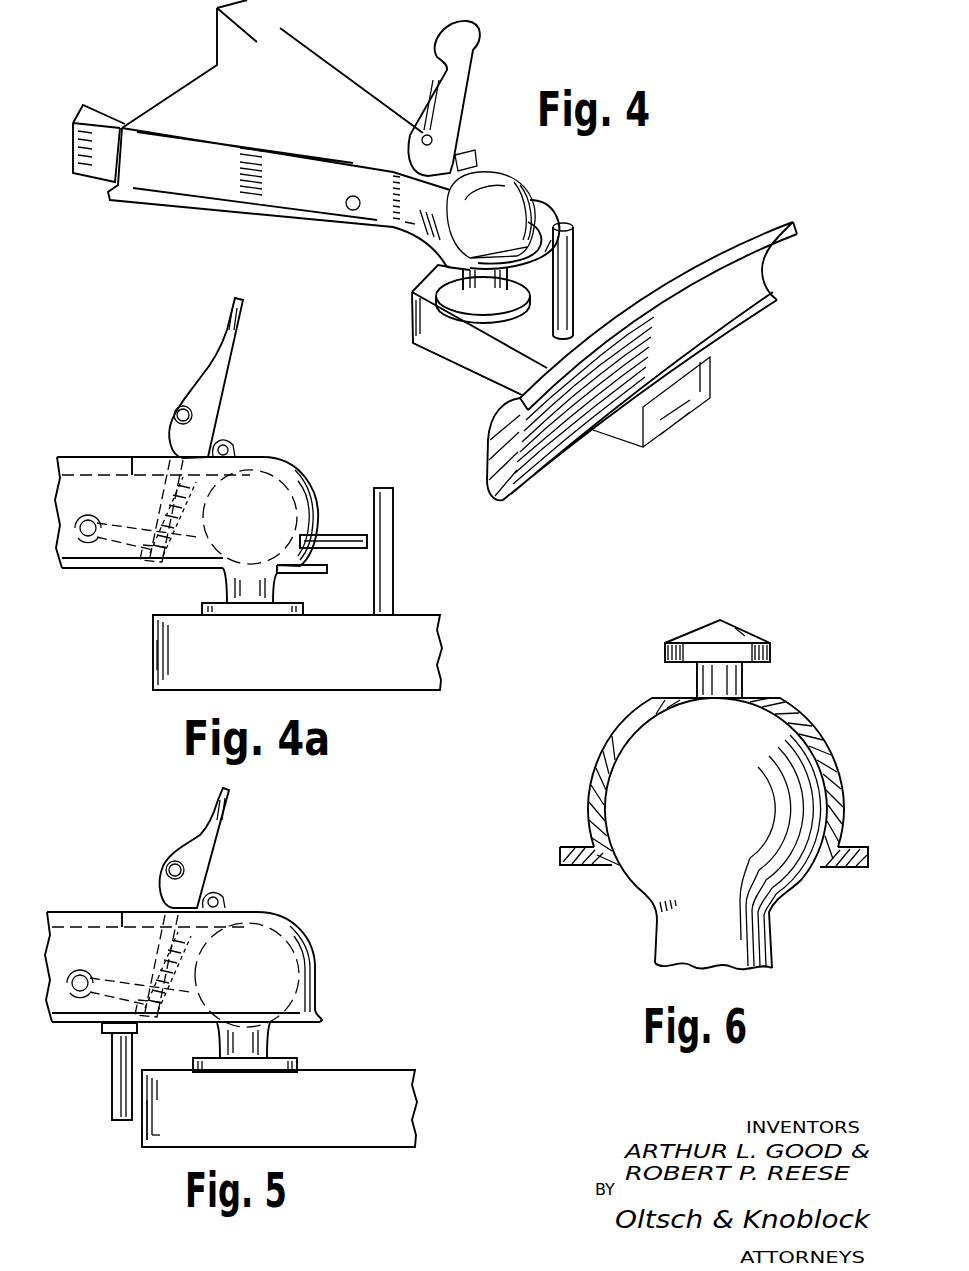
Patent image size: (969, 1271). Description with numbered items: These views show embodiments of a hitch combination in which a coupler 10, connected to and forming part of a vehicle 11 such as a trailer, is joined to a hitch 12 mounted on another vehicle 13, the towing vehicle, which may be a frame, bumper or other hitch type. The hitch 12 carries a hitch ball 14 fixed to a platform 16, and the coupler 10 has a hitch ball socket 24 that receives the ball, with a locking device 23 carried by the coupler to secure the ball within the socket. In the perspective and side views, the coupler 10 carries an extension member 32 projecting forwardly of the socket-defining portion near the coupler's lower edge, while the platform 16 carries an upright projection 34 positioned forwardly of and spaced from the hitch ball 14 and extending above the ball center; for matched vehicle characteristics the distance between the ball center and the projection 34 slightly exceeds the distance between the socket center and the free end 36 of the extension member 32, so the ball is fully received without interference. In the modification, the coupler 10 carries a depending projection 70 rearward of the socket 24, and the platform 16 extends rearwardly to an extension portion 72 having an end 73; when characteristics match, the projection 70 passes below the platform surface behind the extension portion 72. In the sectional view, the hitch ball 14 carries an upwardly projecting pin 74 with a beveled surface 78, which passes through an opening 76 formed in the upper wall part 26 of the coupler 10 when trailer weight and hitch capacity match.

In FIG. 4, the coupler 10 is at (342, 87).
In FIG. 4A, the coupler 10 is at (90, 455).
In FIG. 5, the coupler 10 is at (70, 906).
In FIG. 6, the coupler 10 is at (595, 750).
In FIG. 4, the vehicle 11 is at (217, 45).
In FIG. 4, the hitch 12 is at (425, 352).
In FIG. 4A, the hitch 12 is at (394, 680).
In FIG. 5, the hitch 12 is at (396, 1077).
In FIG. 4, the vehicle 13 is at (762, 272).
In FIG. 4, the hitch ball 14 is at (438, 271).
In FIG. 4A, the hitch ball 14 is at (268, 482).
In FIG. 5, the hitch ball 14 is at (282, 958).
In FIG. 6, the hitch ball 14 is at (792, 904).
In FIG. 4, the platform 16 is at (480, 370).
In FIG. 4A, the platform 16 is at (157, 662).
In FIG. 5, the platform 16 is at (377, 1137).
In FIG. 4, the locking device 23 is at (480, 33).
In FIG. 4A, the locking device 23 is at (227, 357).
In FIG. 5, the locking device 23 is at (194, 848).
In FIG. 4A, the hitch ball socket 24 is at (292, 570).
In FIG. 5, the hitch ball socket 24 is at (293, 1028).
In FIG. 6, the hitch ball socket 24 is at (823, 870).
In FIG. 6, the upper wall part 26 is at (647, 703).
In FIG. 4, the extension member 32 is at (550, 213).
In FIG. 4A, the extension member 32 is at (338, 538).
In FIG. 4, the upright projection 34 is at (577, 262).
In FIG. 4A, the upright projection 34 is at (392, 518).
In FIG. 4, the free end 36 is at (546, 263).
In FIG. 4A, the free end 36 is at (370, 548).
In FIG. 5, the depending projection 70 is at (117, 1062).
In FIG. 5, the extension portion 72 is at (158, 1133).
In FIG. 5, the end 73 is at (140, 1133).
In FIG. 6, the pin 74 is at (703, 627).
In FIG. 6, the opening 76 is at (770, 705).
In FIG. 6, the surface 78 is at (773, 652).